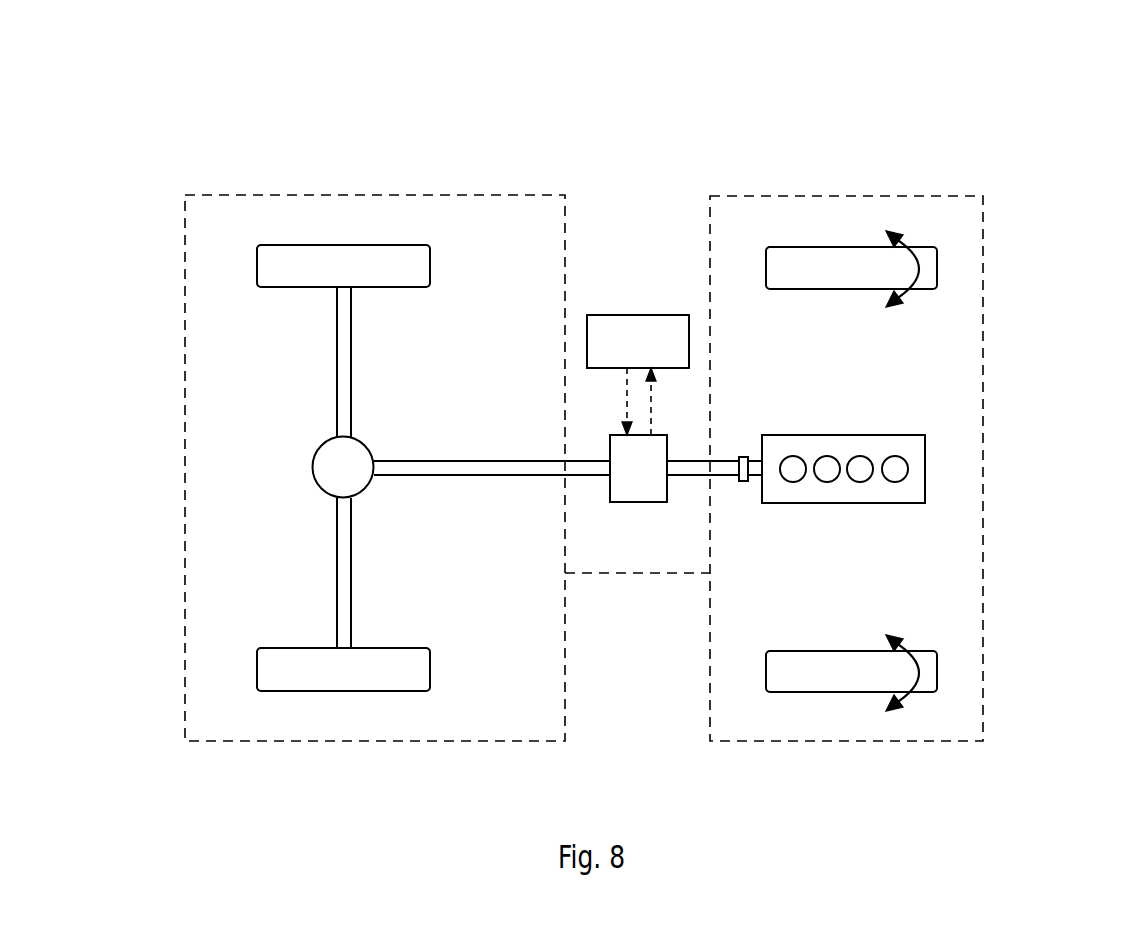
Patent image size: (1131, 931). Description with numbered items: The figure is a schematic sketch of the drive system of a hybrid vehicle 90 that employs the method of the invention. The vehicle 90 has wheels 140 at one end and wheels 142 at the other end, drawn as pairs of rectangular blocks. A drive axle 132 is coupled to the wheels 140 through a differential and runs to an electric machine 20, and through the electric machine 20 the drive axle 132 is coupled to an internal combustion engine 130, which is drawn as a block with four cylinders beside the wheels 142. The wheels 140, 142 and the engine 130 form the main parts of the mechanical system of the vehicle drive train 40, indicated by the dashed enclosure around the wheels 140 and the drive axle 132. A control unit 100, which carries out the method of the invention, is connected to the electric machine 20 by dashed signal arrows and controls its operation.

The electric machine 20 is at (656, 481).
The mechanical system of the vehicle drive train 40 is at (375, 194).
The vehicle 90 is at (1006, 156).
The control unit 100 is at (661, 356).
The internal combustion engine 130 is at (880, 435).
The drive axle 132 is at (490, 460).
The wheels 140 is at (295, 289).
The wheels 142 is at (817, 290).